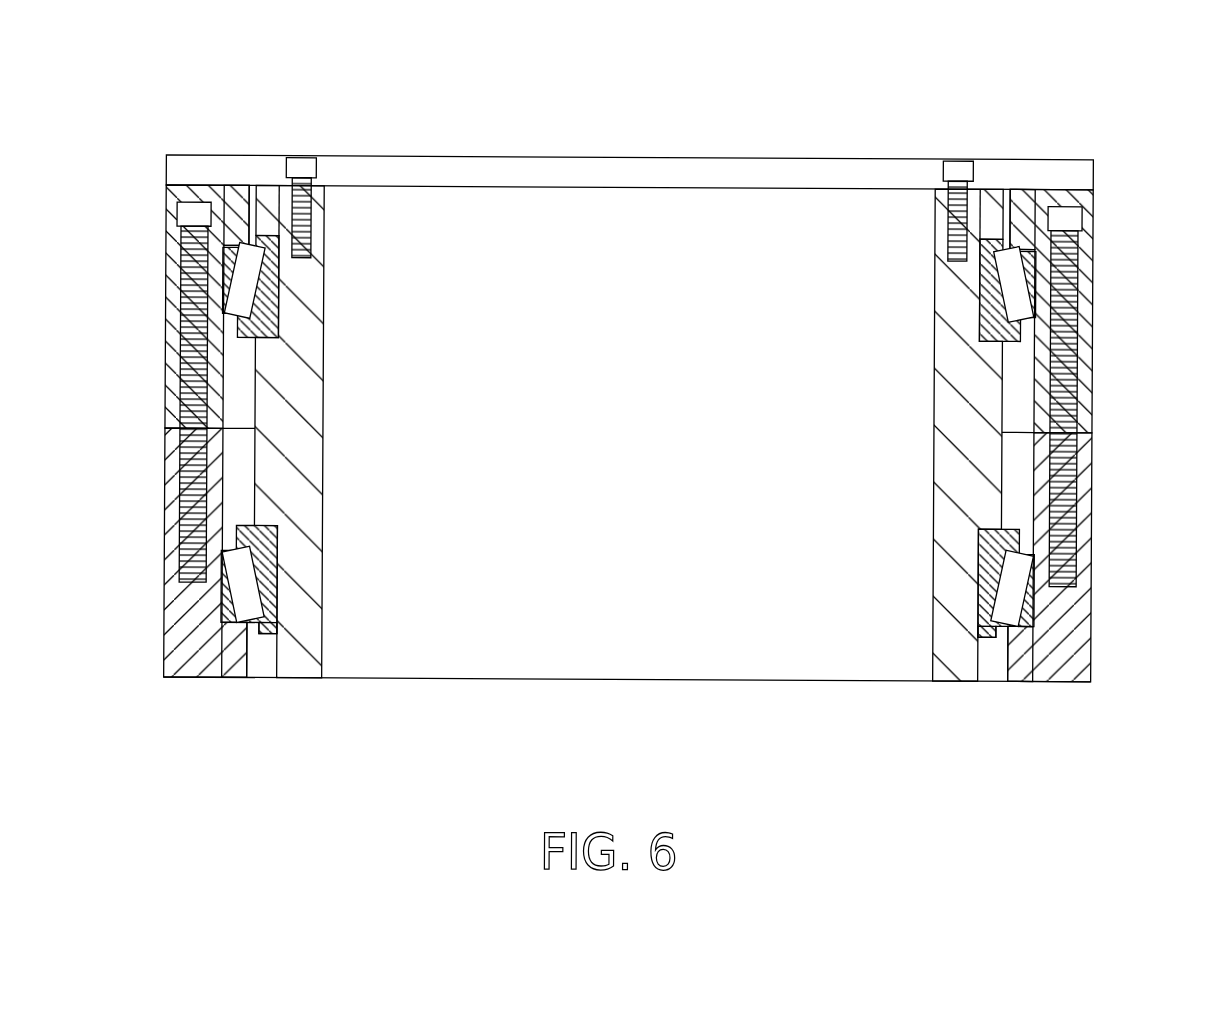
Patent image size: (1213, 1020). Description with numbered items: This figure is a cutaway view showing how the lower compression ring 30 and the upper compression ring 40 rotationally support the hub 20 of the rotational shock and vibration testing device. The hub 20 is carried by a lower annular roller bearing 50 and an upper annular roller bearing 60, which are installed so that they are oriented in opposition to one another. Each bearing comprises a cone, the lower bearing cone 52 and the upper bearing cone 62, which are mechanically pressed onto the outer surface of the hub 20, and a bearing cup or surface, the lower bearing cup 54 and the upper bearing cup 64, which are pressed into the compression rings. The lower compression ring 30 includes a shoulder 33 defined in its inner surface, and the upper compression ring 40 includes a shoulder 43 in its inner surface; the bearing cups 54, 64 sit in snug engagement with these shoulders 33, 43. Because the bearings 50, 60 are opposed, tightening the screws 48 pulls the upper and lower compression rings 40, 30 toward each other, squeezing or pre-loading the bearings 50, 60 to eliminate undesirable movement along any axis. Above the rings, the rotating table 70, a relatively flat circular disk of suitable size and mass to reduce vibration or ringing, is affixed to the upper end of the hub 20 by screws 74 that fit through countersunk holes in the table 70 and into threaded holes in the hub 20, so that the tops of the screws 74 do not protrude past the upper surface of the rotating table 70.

The hub 20 is at (620, 627).
The lower compression ring 30 is at (1092, 544).
The shoulder 33 is at (231, 622).
The upper compression ring 40 is at (1092, 286).
The shoulder 43 is at (230, 243).
The screws 48 is at (190, 210).
The lower annular roller bearing 50 is at (268, 636).
The lower bearing cone 52 is at (283, 620).
The lower bearing cup 54 is at (223, 282).
The upper annular roller bearing 60 is at (265, 228).
The upper bearing cone 62 is at (283, 233).
The upper bearing cup 64 is at (222, 588).
The rotating table 70 is at (642, 168).
The screws 74 is at (300, 168).